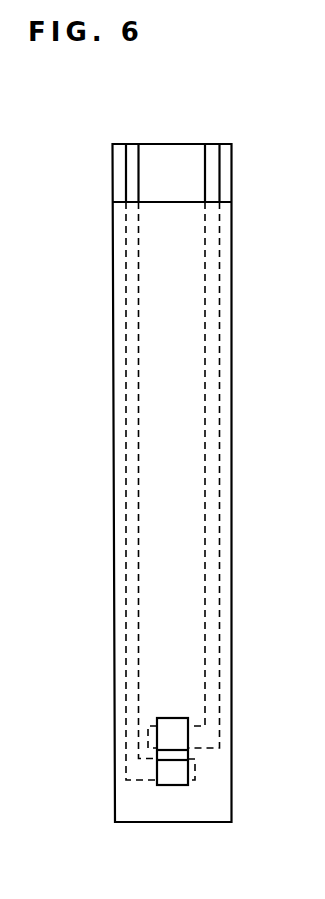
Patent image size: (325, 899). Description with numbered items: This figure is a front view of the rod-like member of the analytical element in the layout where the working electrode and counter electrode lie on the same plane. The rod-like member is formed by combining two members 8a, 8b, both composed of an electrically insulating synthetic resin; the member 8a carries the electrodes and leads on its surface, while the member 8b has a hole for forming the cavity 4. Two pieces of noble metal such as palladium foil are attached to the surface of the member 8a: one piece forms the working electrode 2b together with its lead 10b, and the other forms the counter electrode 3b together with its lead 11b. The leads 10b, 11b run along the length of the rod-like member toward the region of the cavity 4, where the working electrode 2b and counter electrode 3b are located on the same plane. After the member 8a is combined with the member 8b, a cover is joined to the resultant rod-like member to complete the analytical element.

The member 8a is at (168, 158).
The member 8b is at (180, 440).
The lead 10b is at (210, 152).
The lead 11b is at (133, 150).
The cavity 4 is at (173, 718).
The working electrode 2b is at (178, 738).
The counter electrode 3b is at (173, 772).